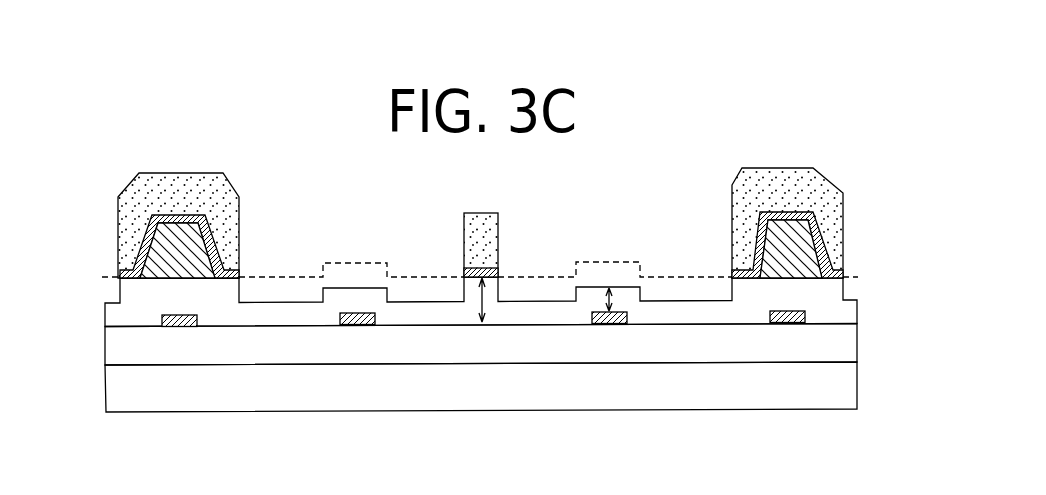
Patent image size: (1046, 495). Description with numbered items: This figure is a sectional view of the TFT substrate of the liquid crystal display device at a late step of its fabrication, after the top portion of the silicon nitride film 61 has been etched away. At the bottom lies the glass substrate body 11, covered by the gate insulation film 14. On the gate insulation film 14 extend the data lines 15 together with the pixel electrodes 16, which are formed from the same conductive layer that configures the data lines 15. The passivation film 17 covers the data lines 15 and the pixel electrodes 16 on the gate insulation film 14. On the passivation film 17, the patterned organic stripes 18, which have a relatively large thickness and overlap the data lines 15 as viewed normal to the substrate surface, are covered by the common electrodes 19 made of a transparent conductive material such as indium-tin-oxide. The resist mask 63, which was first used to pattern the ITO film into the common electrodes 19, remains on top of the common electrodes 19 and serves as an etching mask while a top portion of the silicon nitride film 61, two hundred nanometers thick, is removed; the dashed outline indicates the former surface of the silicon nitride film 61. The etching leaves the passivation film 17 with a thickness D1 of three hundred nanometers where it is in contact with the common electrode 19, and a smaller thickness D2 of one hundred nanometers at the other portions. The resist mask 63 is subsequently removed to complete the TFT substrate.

The glass substrate body 11 is at (840, 385).
The gate insulation film 14 is at (840, 343).
The data lines 15 is at (179, 315).
The pixel electrodes 16 is at (610, 323).
The passivation film 17 is at (840, 308).
The patterned organic stripes 18 is at (773, 240).
The common electrodes 19 is at (488, 268).
The silicon nitride film 61 is at (360, 262).
The resist mask 63 is at (487, 225).
The thickness D1 is at (478, 300).
The thickness D2 is at (610, 290).